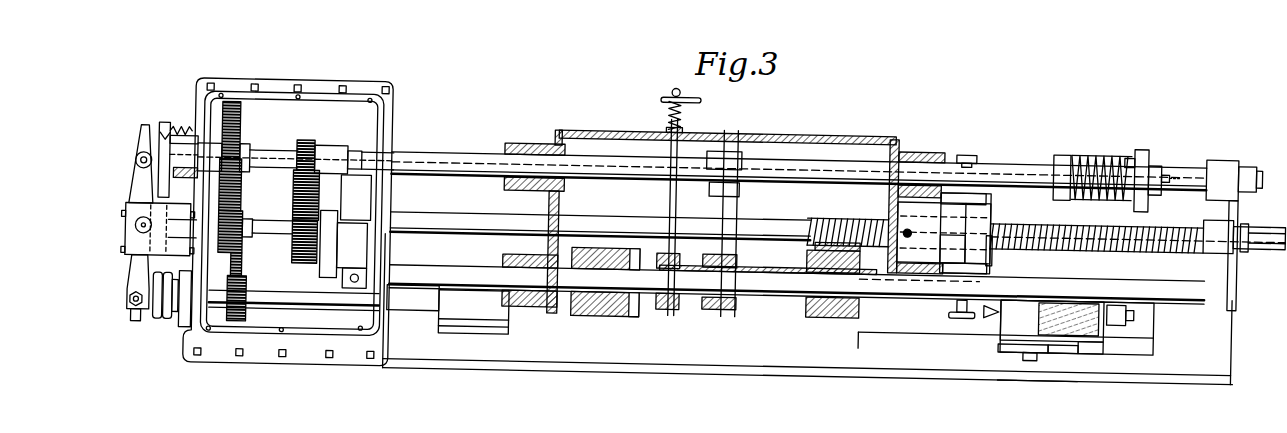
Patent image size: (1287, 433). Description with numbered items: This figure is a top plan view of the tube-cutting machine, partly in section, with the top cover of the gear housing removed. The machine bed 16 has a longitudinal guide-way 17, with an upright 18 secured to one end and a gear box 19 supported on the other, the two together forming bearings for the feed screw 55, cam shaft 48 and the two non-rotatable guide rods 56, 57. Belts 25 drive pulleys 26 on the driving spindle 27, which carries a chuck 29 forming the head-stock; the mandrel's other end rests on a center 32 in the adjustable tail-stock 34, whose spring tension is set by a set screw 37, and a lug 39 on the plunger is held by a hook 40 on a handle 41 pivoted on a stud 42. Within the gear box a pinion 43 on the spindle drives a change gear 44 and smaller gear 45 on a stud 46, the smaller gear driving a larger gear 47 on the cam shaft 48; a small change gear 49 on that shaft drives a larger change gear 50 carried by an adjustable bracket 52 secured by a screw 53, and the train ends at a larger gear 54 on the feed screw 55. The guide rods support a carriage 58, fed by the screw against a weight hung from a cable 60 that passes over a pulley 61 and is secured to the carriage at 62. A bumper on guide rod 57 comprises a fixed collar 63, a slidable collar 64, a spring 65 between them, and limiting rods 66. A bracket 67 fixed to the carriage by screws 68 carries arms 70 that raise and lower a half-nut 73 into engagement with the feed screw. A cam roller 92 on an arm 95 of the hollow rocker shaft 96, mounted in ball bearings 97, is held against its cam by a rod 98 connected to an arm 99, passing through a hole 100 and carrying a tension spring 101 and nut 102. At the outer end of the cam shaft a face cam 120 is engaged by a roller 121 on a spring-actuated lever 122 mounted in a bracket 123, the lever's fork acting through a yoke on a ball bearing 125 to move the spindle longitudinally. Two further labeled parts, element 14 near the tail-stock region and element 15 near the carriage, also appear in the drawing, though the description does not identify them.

The clamp bolt 14 is at (964, 320).
The stop bracket 15 is at (957, 150).
The machine bed 16 is at (1037, 375).
The longitudinal guide-way 17 is at (809, 309).
The upright 18 is at (1238, 256).
The gear box 19 is at (382, 128).
The belts 25 is at (168, 330).
The pulleys 26 is at (153, 330).
The driving spindle 27 is at (324, 310).
The chuck 29 is at (483, 335).
The center 32 is at (995, 313).
The tail-stock 34 is at (1077, 327).
The set screw 37 is at (1122, 309).
The lug 39 is at (1076, 340).
The hook 40 is at (1013, 346).
The handle 41 is at (1052, 346).
The stud 42 is at (1035, 346).
The pinion 43 is at (258, 326).
The change gear 44 is at (241, 207).
The smaller gear 45 is at (229, 264).
The stud 46 is at (248, 248).
The larger gear 47 is at (239, 125).
The cam shaft 48 is at (266, 158).
The small change gear 49 is at (307, 148).
The larger change gear 50 is at (296, 270).
The adjustable bracket 52 is at (323, 253).
The screw 53 is at (322, 284).
The larger gear 54 is at (319, 196).
The feed screw 55 is at (438, 221).
The guide rod 56 is at (468, 272).
The guide rod 57 is at (798, 171).
The carriage 58 is at (808, 136).
The cable 60 is at (1078, 218).
The pulley 61 is at (1262, 216).
The cable attachment point 62 is at (916, 221).
The fixed collar 63 is at (1140, 141).
The movable collar 64 is at (1058, 146).
The spring 65 is at (1093, 150).
The rods 66 is at (1130, 170).
The bracket 67 is at (992, 259).
The screws 68 is at (938, 248).
The arm 70 is at (979, 198).
The half-nut 73 is at (986, 214).
The roller 92 is at (740, 156).
The arm 95 is at (739, 209).
The hollow rocker shaft 96 is at (764, 305).
The ball bearings 97 is at (585, 316).
The rod 98 is at (668, 198).
The arm 99 is at (670, 312).
The hole 100 is at (684, 131).
The tension spring 101 is at (684, 117).
The nut 102 is at (690, 100).
The face cam 120 is at (167, 132).
The roller 121 is at (136, 168).
The spring-actuated lever 122 is at (140, 198).
The bracket 123 is at (135, 262).
The ball bearing 125 is at (134, 326).